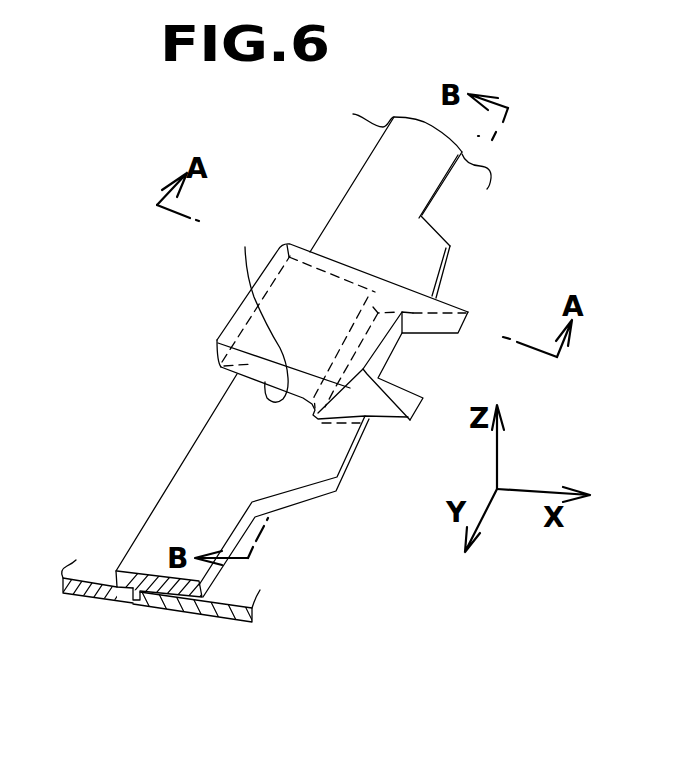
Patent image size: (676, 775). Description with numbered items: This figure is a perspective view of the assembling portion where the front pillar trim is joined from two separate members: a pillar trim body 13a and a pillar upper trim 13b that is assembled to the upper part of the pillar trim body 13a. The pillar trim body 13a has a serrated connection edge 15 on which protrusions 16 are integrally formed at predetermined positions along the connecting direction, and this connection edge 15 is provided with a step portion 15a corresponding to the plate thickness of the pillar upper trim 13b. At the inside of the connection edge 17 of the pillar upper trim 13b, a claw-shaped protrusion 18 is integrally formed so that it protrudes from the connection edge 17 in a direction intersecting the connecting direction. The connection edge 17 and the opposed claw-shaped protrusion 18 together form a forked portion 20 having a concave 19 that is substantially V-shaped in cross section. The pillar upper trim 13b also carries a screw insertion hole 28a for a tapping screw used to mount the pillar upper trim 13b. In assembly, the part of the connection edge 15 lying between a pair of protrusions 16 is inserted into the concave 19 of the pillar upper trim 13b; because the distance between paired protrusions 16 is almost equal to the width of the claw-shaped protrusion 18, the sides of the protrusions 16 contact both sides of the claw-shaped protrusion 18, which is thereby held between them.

The pillar trim body 13a is at (119, 542).
The pillar upper trim 13b is at (358, 570).
The connection edge 15 is at (243, 420).
The step portion 15a is at (142, 600).
The protrusions 16 is at (432, 249).
The connection edge 17 is at (231, 598).
The claw-shaped protrusion 18 is at (307, 297).
The concave 19 is at (258, 308).
The forked portion 20 is at (357, 295).
The screw insertion hole 28a is at (220, 365).